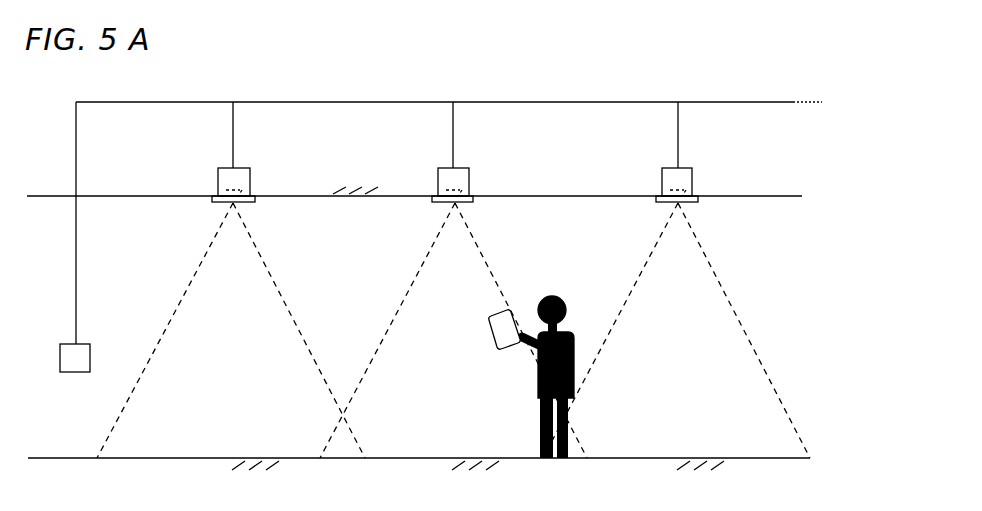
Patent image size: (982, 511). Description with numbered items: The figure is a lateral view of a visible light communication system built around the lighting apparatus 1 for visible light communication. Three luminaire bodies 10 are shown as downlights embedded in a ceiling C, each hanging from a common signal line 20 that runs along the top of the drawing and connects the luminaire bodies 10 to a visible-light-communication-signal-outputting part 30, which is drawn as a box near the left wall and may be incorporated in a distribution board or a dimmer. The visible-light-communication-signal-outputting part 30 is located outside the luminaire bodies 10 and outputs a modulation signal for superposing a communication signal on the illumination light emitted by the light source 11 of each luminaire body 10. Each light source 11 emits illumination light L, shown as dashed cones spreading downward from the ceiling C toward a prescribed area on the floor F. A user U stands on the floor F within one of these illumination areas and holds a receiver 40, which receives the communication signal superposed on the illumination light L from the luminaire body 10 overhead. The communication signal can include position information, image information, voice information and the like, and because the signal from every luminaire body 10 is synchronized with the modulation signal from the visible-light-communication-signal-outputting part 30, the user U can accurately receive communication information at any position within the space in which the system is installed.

The lighting apparatus for visible light communication 1 is at (45, 97).
The luminaire body 10 is at (226, 170).
The light source 11 is at (245, 186).
The signal line 20 is at (540, 102).
The visible-light-communication-signal-outputting part 30 is at (87, 356).
The receiver 40 is at (488, 331).
The ceiling C is at (146, 196).
The floor F is at (78, 458).
The illumination light L is at (170, 300).
The user U is at (572, 346).